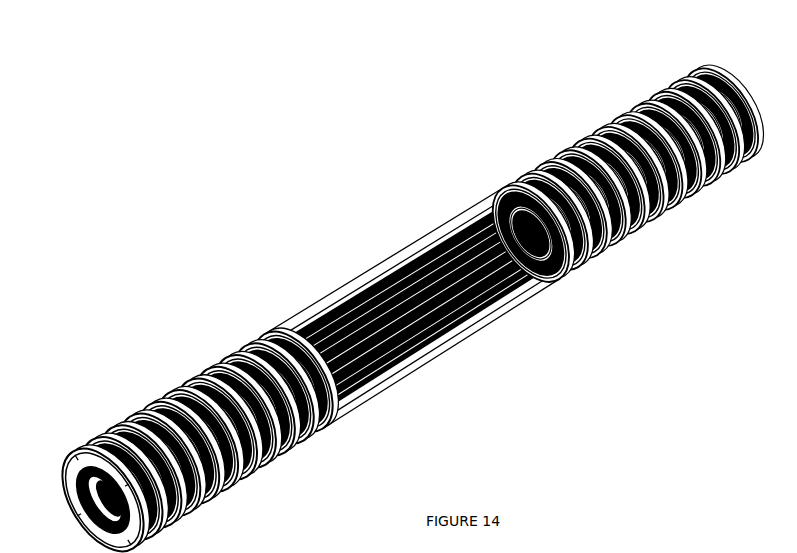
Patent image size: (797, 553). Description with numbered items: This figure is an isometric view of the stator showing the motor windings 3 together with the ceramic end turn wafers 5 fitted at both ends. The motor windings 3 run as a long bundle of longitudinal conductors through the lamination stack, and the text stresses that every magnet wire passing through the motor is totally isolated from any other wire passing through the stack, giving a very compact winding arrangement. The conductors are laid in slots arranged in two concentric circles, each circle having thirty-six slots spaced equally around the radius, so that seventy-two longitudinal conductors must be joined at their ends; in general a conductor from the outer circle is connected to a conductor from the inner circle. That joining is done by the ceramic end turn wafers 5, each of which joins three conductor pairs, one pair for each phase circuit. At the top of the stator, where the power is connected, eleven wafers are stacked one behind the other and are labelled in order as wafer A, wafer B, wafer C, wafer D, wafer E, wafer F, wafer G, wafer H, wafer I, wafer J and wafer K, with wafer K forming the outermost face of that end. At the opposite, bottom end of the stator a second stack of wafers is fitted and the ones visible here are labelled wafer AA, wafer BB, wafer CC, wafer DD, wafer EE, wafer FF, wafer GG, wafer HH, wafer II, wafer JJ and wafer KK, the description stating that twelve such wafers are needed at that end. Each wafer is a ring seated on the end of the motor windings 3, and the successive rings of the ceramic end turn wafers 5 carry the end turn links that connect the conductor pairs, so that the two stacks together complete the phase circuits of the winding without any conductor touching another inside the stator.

The motor windings 3 is at (467, 320).
The ceramic end turn wafers 5 is at (412, 288).
The ceramic end turn wafer A is at (283, 320).
The ceramic end turn wafer B is at (270, 330).
The ceramic end turn wafer C is at (247, 343).
The ceramic end turn wafer D is at (228, 355).
The ceramic end turn wafer E is at (203, 367).
The ceramic end turn wafer F is at (188, 380).
The ceramic end turn wafer G is at (165, 393).
The ceramic end turn wafer H is at (142, 402).
The ceramic end turn wafer I is at (127, 418).
The ceramic end turn wafer J is at (112, 430).
The ceramic end turn wafer K is at (90, 433).
The ceramic end turn wafer AA is at (507, 177).
The ceramic end turn wafer BB is at (522, 167).
The ceramic end turn wafer CC is at (542, 157).
The ceramic end turn wafer DD is at (560, 147).
The ceramic end turn wafer EE is at (580, 138).
The ceramic end turn wafer FF is at (600, 122).
The ceramic end turn wafer GG is at (620, 112).
The ceramic end turn wafer HH is at (640, 103).
The ceramic end turn wafer II is at (657, 87).
The ceramic end turn wafer JJ is at (677, 73).
The ceramic end turn wafer KK is at (700, 60).